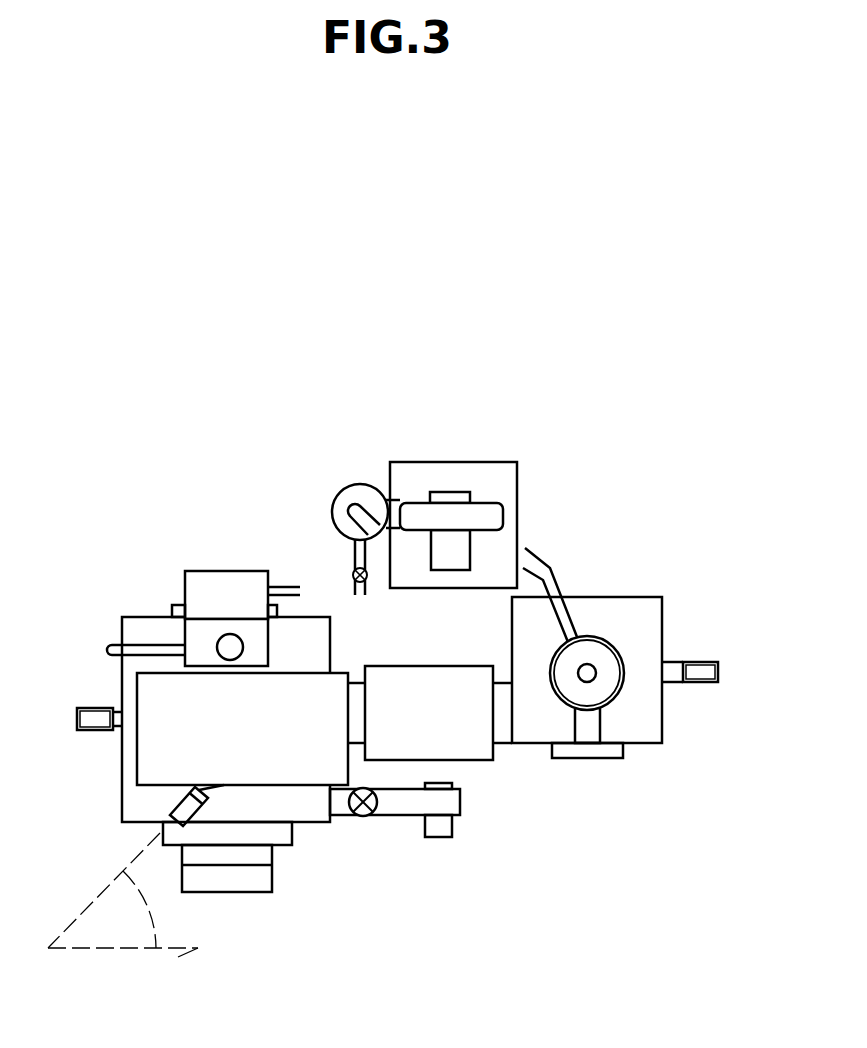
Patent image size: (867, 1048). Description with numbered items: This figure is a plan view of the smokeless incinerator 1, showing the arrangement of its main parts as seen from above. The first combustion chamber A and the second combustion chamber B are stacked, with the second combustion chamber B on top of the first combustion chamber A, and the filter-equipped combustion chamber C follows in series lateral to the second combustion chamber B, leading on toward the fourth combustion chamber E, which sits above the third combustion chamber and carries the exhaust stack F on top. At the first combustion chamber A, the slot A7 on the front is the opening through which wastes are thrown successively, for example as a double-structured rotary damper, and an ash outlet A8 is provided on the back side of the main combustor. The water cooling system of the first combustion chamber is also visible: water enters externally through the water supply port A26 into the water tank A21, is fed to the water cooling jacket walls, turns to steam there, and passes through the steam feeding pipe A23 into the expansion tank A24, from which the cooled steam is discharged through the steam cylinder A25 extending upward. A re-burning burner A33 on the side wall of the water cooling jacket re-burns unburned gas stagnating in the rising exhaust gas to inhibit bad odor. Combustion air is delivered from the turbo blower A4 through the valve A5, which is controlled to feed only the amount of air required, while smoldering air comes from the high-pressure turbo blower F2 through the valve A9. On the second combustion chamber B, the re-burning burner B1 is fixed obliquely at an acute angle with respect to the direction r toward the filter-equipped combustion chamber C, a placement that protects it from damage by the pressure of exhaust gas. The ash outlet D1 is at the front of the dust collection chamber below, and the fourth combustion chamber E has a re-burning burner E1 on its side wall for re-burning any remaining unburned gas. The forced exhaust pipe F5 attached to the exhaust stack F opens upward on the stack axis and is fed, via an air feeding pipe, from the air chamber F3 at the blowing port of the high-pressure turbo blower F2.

The smokeless incinerator 1 is at (206, 418).
The first combustion chamber A is at (306, 659).
The second combustion chamber B is at (250, 733).
The filter-equipped combustion chamber C is at (422, 731).
The fourth combustion chamber E is at (626, 629).
The water tank A21 is at (229, 593).
The expansion tank A24 is at (200, 640).
The steam cylinder A25 is at (230, 640).
The ash outlet A8 is at (172, 607).
The water supply port A26 is at (288, 585).
The steam feeding pipe A23 is at (120, 643).
The re-burning burner A33 is at (95, 712).
The re-burning burner B1 is at (188, 808).
The slot A7 is at (222, 860).
The valve A5 is at (372, 818).
The turbo blower A4 is at (435, 805).
The high-pressure turbo blower F2 is at (450, 515).
The air chamber F3 is at (358, 497).
The valve A9 is at (368, 580).
The forced exhaust pipe F5 is at (563, 622).
The exhaust stack F is at (625, 690).
The ash outlet D1 is at (588, 762).
The re-burning burner E1 is at (700, 662).
The direction toward the filter-equipped combustion chamber r is at (113, 949).